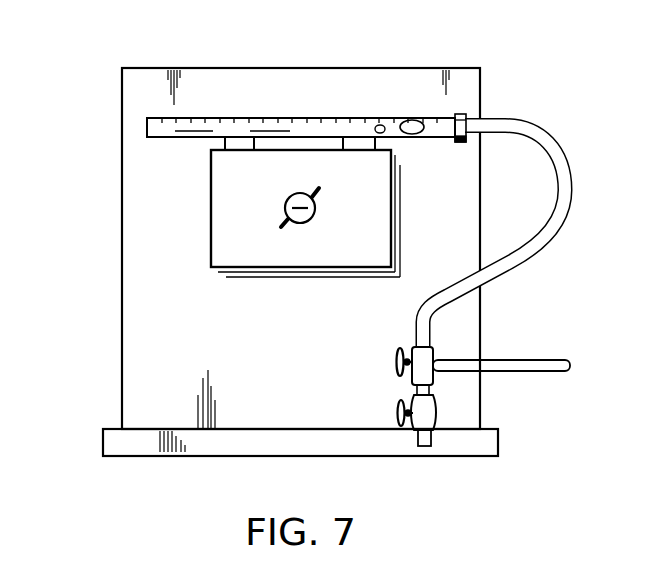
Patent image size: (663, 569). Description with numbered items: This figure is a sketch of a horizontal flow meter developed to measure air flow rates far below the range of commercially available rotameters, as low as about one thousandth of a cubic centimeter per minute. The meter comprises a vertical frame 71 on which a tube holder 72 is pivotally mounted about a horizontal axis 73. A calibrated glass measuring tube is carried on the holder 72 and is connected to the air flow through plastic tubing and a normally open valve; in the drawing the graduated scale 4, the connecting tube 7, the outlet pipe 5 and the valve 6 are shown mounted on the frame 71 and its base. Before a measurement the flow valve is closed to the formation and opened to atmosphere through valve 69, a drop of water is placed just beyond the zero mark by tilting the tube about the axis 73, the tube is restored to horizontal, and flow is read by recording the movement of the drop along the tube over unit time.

The graduated scale ruler 4 is at (265, 118).
The outlet pipe 5 is at (551, 360).
The valve 6 is at (398, 362).
The tube 7 is at (409, 116).
The valve 69 is at (398, 411).
The vertical frame 71 is at (133, 266).
The tube holder 72 is at (226, 229).
The horizontal axis 73 is at (284, 209).